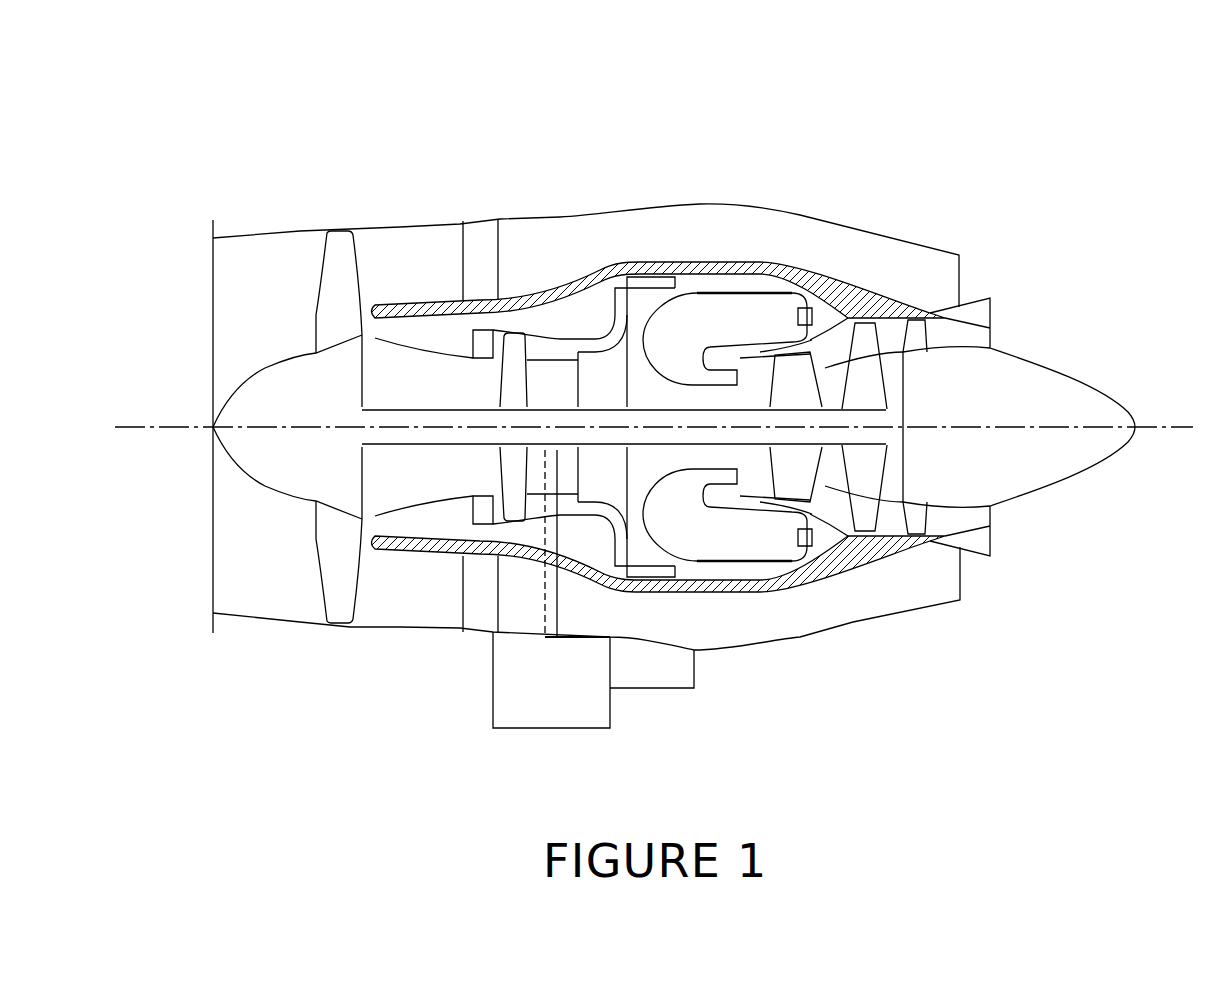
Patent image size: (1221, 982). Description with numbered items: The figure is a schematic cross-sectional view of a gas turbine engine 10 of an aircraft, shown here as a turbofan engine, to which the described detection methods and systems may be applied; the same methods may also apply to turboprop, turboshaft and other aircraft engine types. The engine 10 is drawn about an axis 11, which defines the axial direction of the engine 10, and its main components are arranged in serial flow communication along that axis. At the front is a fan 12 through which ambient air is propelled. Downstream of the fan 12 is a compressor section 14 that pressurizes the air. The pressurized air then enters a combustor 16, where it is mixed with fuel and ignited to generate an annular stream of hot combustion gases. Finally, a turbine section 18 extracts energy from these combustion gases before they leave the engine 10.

The gas turbine engine 10 is at (850, 160).
The axis 11 is at (1168, 425).
The fan 12 is at (333, 556).
The compressor section 14 is at (542, 345).
The combustor 16 is at (722, 312).
The turbine section 18 is at (829, 481).